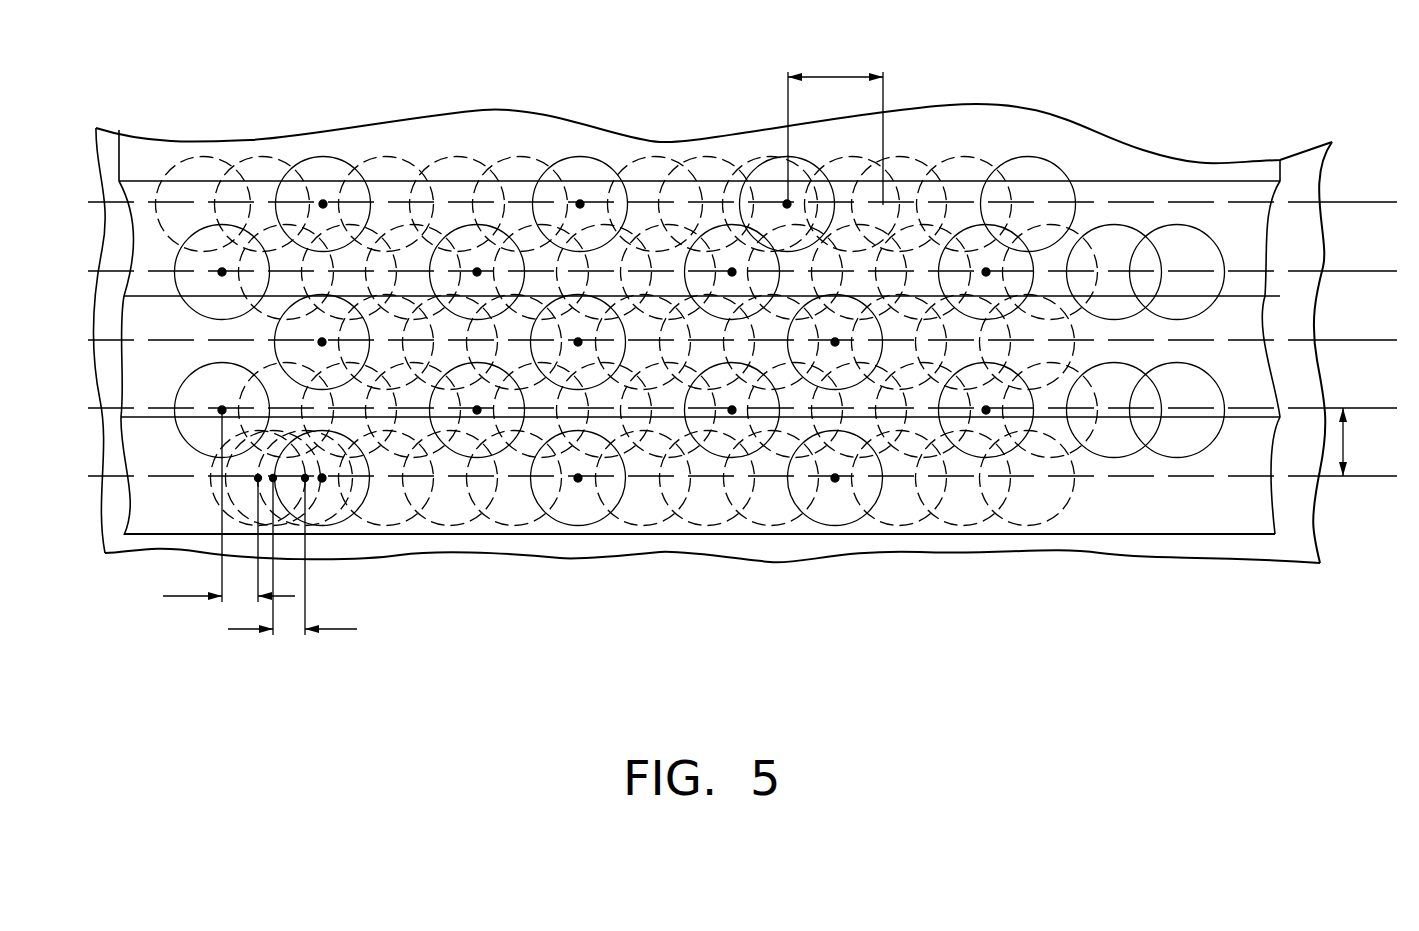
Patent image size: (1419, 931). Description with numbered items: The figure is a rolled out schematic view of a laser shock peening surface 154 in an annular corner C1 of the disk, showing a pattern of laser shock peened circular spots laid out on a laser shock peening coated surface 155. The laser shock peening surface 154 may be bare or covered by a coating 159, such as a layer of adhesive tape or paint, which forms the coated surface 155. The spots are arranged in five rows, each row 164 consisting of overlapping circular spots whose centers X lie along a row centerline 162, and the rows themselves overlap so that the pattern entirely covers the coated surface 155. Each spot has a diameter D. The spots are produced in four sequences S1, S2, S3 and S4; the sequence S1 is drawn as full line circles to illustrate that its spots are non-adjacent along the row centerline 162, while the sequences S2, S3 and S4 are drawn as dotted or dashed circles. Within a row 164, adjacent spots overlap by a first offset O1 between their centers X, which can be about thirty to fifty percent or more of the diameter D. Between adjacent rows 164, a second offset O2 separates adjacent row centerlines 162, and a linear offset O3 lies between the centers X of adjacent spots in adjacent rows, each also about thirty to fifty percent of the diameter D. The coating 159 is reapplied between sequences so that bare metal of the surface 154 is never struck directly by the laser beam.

The row 164 is at (150, 161).
The coating 159 is at (1155, 165).
The row centerline 162 is at (1240, 268).
The laser shock peening surface 154 is at (1305, 530).
The laser shock peening coated surface 155 is at (1170, 513).
The first sequence S1 is at (323, 157).
The second sequence S2 is at (377, 157).
The third sequence S3 is at (460, 157).
The fourth sequence S4 is at (520, 157).
The center X is at (182, 311).
The diameter D is at (833, 73).
The first offset O1 is at (342, 629).
The second offset O2 is at (1347, 442).
The linear offset O3 is at (180, 596).
The inner forward annular corner C1 is at (587, 552).